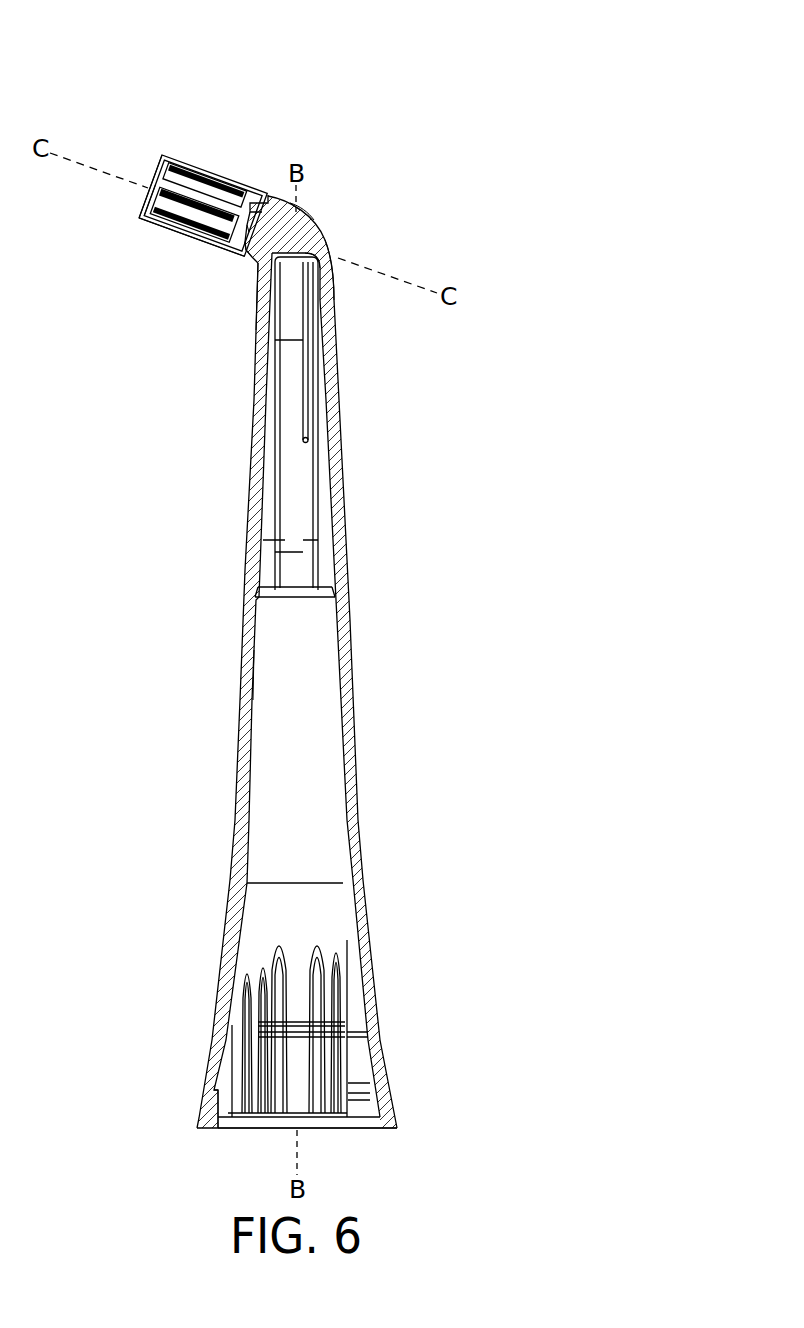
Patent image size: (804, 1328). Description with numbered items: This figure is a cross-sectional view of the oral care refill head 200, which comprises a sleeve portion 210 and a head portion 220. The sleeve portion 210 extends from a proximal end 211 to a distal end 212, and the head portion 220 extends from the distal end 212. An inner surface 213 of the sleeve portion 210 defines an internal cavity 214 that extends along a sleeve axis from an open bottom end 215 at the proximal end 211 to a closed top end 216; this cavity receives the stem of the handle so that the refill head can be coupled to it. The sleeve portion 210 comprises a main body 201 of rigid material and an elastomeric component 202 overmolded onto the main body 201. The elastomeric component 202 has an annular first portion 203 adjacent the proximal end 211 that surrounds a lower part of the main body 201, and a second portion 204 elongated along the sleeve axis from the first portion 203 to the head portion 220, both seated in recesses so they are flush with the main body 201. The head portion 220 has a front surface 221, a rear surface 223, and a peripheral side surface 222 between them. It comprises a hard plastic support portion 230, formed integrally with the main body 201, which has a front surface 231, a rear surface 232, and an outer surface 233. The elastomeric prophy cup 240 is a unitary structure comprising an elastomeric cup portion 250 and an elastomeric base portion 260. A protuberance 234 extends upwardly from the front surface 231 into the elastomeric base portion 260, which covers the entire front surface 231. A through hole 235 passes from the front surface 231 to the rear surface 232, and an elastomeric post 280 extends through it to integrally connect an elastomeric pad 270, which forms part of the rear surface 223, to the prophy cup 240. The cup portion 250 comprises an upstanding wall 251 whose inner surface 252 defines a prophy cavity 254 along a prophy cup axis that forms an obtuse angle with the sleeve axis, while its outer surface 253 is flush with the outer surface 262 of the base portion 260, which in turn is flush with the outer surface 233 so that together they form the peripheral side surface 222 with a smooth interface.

The oral care refill head 200 is at (413, 505).
The main body 201 is at (245, 810).
The elastomeric component 202 is at (370, 1043).
The first portion 203 is at (208, 1113).
The second portion 204 is at (350, 740).
The sleeve portion 210 is at (248, 640).
The proximal end 211 is at (387, 1132).
The distal end 212 is at (297, 233).
The inner surface 213 is at (257, 676).
The internal cavity 214 is at (271, 895).
The open bottom end 215 is at (255, 1130).
The closed top end 216 is at (300, 262).
The head portion 220 is at (314, 207).
The front surface 221 is at (213, 187).
The peripheral side surface 222 is at (250, 260).
The rear surface 223 is at (322, 238).
The support portion 230 is at (257, 268).
The front surface 231 is at (205, 205).
The rear surface 232 is at (300, 213).
The outer surface 233 is at (308, 212).
The protuberance 234 is at (160, 196).
The through hole 235 is at (265, 229).
The elastomeric prophy cup 240 is at (183, 178).
The elastomeric cup portion 250 is at (170, 240).
The upstanding wall 251 is at (193, 243).
The inner surface 252 is at (200, 163).
The outer surface 253 is at (163, 232).
The prophy cavity 254 is at (155, 180).
The elastomeric base portion 260 is at (242, 256).
The outer surface 262 is at (250, 196).
The elastomeric pad 270 is at (313, 237).
The elastomeric post 280 is at (277, 252).